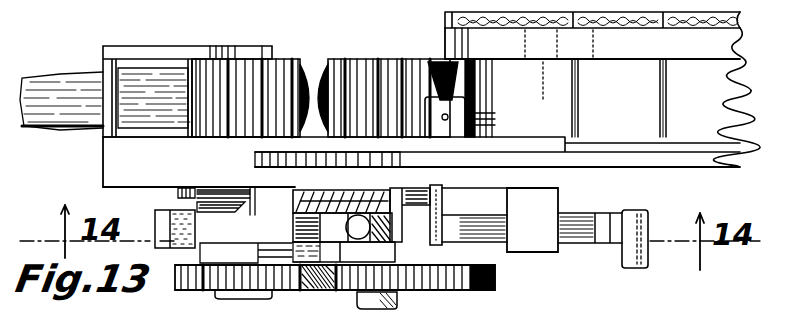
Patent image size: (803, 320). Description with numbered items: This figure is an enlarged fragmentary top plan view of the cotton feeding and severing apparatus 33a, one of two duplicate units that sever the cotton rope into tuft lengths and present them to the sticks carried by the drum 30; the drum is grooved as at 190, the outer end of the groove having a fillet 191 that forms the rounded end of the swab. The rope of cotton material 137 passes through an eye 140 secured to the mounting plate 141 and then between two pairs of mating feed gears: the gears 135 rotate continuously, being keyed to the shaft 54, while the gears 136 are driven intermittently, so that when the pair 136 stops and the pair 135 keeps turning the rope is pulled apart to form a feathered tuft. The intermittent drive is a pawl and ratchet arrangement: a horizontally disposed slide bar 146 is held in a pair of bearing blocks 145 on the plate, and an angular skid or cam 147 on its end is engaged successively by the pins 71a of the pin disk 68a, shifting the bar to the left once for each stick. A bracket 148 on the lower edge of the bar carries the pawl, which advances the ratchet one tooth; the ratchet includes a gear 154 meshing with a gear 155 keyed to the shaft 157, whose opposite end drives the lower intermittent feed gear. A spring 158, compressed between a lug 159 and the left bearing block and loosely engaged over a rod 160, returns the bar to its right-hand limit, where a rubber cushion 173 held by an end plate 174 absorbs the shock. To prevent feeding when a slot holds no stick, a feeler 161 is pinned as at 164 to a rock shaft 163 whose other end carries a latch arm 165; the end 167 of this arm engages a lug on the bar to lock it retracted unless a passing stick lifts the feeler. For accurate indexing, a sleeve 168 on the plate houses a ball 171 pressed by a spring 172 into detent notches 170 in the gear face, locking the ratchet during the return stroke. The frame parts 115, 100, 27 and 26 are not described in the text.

The top plate 115 is at (742, 20).
The frame 100 is at (730, 42).
The eye 140 is at (110, 66).
The rope of cotton material 137 is at (50, 86).
The intermittent feed gears 136 is at (254, 74).
The continuously driven feed gears 135 is at (365, 66).
The rock shaft 163 is at (445, 78).
The pin 164 is at (448, 115).
The feeler 161 is at (486, 118).
The column 27 is at (666, 90).
The drum 30 is at (722, 110).
The groove 190 is at (742, 78).
The fillet 191 is at (738, 133).
The base plate 26 is at (730, 168).
The mounting plate 141 is at (104, 182).
The cotton feeding and severing apparatus 33a is at (127, 155).
The spring 158 is at (348, 190).
The rod 160 is at (210, 190).
The cushion 173 is at (183, 212).
The end plate 174 is at (156, 226).
The bearing blocks 145 is at (258, 192).
The end of latch arm 167 is at (298, 222).
The latch arm 165 is at (385, 232).
The spring 172 is at (296, 250).
The lug 159 is at (398, 190).
The bracket 148 is at (432, 248).
The slide bar 146 is at (483, 232).
The angular skid or cam 147 is at (606, 225).
The pins 71a is at (642, 234).
The pin disk 68a is at (697, 318).
The gear 155 is at (180, 284).
The detent notches 170 is at (310, 290).
The ball 171 is at (320, 291).
The gear 154 is at (500, 283).
The shaft 157 is at (242, 300).
The shaft 54 is at (400, 300).
The sleeve 168 is at (262, 257).